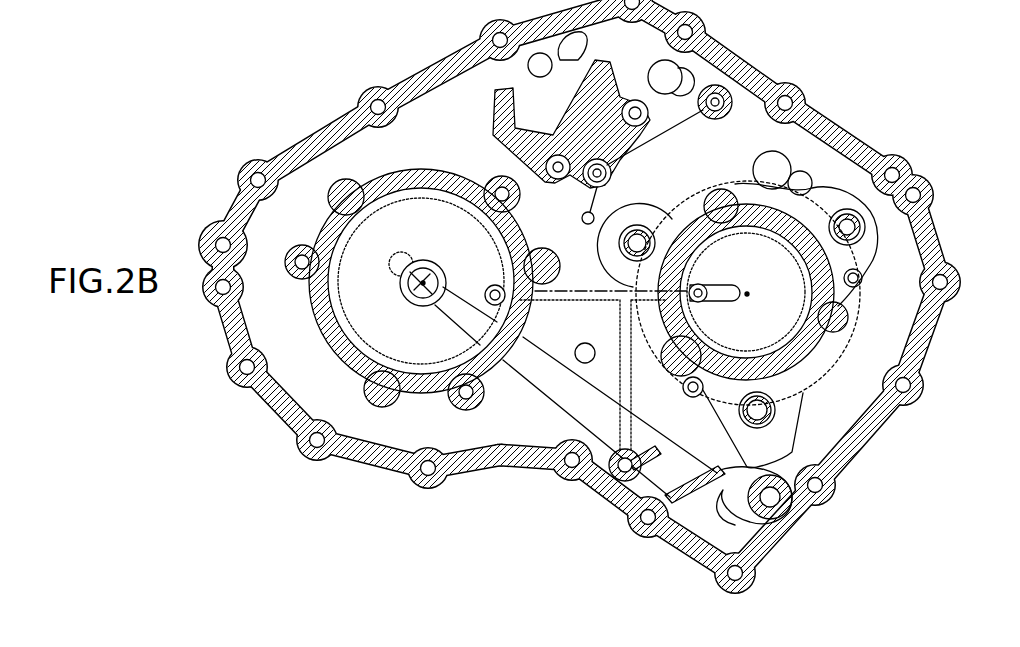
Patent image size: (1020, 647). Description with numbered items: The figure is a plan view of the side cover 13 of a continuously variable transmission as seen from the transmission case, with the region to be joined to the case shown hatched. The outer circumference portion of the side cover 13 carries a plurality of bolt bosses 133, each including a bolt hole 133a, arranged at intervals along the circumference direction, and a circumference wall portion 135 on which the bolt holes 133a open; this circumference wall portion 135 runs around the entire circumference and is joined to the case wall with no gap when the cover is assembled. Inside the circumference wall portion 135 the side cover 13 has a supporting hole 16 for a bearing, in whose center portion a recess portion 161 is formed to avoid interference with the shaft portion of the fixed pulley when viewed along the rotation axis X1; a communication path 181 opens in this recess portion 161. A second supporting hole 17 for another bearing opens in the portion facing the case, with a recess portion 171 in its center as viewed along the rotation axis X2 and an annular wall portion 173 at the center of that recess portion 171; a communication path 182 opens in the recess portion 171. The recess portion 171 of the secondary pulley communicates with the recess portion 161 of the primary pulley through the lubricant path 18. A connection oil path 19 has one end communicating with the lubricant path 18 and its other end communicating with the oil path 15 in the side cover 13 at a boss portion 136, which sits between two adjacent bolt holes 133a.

The side cover 13 is at (310, 88).
The oil path 15 is at (600, 492).
The supporting hole 16 is at (690, 232).
The supporting hole 17 is at (437, 171).
The lubricant path 18 is at (575, 290).
The connection oil path 19 is at (682, 390).
The bolt boss 133 is at (800, 102).
The bolt hole 133a is at (373, 90).
The circumference wall portion 135 is at (272, 432).
The boss portion 136 is at (640, 458).
The recess portion 161 is at (838, 320).
The recess portion 171 is at (325, 328).
The annular wall portion 173 is at (404, 260).
The communication path 181 is at (708, 306).
The communication path 182 is at (489, 290).
The rotation axis X1 is at (747, 291).
The rotation axis X2 is at (424, 300).